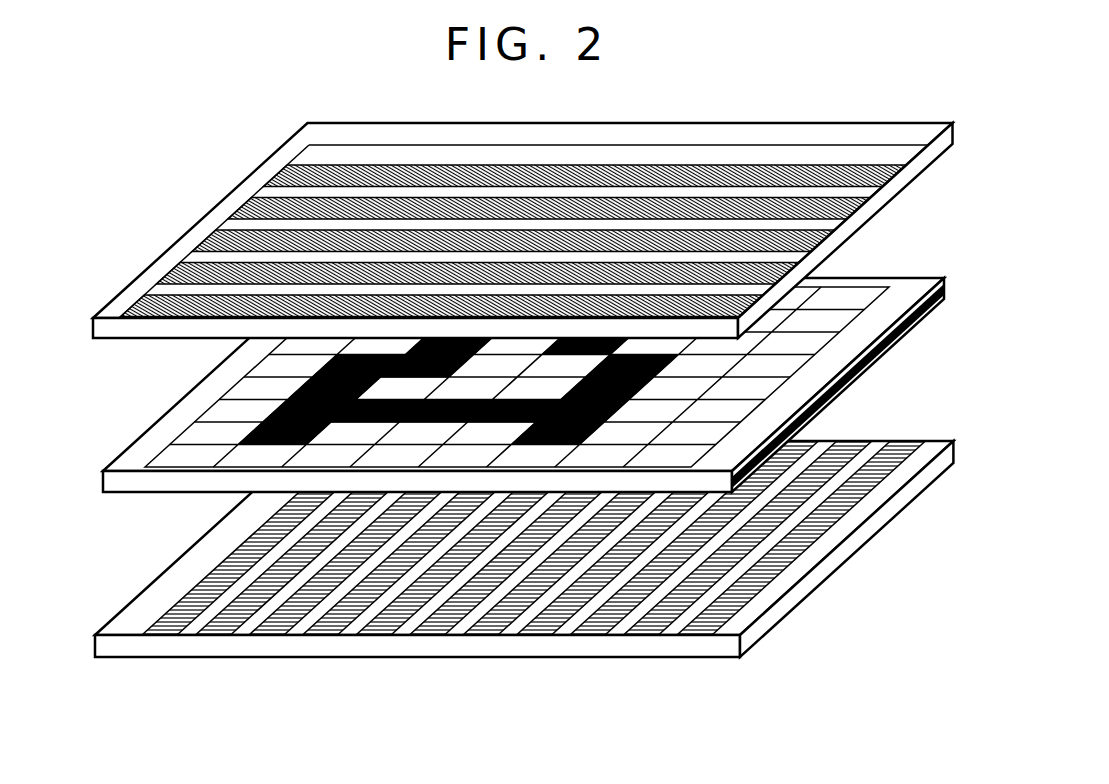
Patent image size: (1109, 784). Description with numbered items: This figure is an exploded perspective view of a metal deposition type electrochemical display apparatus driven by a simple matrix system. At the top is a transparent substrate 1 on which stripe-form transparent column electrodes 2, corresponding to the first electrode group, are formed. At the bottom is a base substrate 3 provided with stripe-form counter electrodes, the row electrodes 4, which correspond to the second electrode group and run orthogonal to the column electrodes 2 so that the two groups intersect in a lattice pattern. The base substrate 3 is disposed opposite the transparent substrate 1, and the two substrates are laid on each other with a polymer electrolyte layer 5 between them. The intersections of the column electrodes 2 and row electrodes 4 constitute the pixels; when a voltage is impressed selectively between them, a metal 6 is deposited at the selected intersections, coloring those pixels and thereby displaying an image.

The transparent substrate 1 is at (880, 123).
The transparent column electrodes 2 is at (913, 178).
The base substrate 3 is at (152, 648).
The row electrodes 4 is at (253, 545).
The polymer electrolyte layer 5 is at (152, 442).
The metal 6 is at (302, 386).